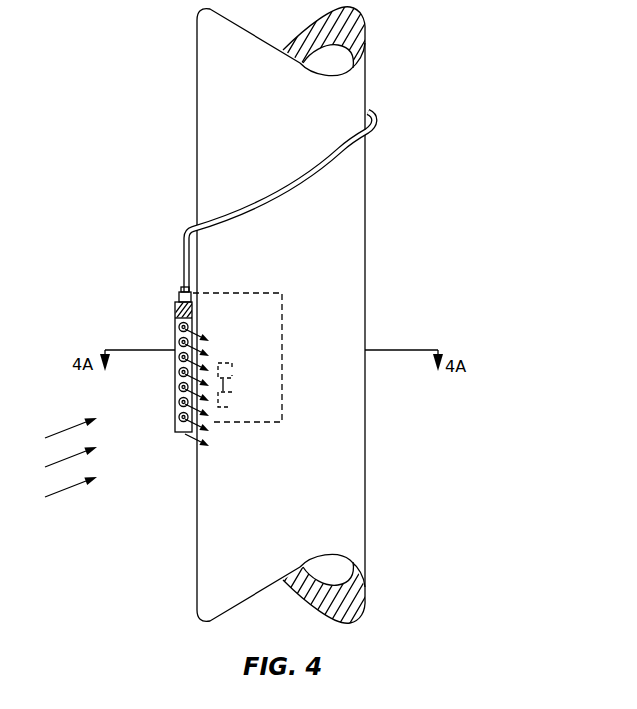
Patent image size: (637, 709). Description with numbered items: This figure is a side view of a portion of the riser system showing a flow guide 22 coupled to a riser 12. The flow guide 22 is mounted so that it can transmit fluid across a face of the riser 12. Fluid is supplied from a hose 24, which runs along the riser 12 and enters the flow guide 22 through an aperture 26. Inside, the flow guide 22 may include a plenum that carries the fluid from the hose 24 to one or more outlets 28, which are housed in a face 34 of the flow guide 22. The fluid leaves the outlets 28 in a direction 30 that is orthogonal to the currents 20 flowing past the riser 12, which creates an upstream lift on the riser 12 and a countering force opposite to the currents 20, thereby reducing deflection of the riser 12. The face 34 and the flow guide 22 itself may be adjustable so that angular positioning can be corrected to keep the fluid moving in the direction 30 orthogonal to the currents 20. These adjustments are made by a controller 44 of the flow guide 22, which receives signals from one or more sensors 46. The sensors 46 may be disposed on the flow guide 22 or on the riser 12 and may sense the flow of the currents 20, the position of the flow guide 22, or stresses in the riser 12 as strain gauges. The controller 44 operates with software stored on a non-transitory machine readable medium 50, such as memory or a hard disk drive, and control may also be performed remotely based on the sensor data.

The riser 12 is at (292, 132).
The currents 20 is at (64, 430).
The flow guide 22 is at (178, 299).
The hose 24 is at (370, 113).
The aperture 26 is at (184, 290).
The outlets 28 is at (175, 343).
The direction 30 is at (207, 343).
The face 34 is at (176, 304).
The controller 44 is at (232, 366).
The sensors 46 is at (178, 327).
The non-transitory machine readable medium 50 is at (230, 397).